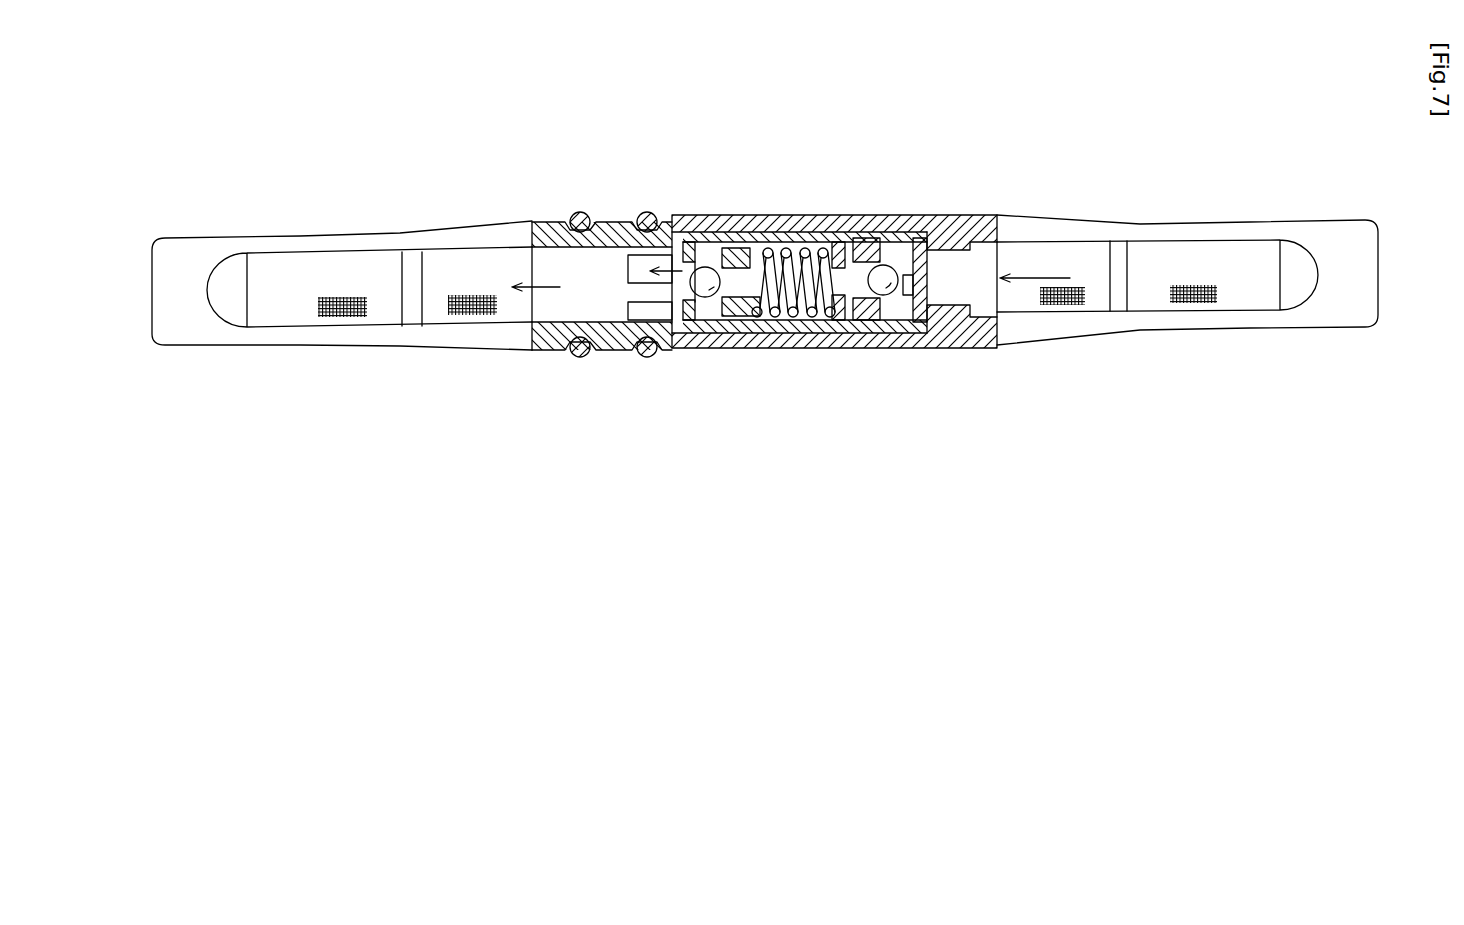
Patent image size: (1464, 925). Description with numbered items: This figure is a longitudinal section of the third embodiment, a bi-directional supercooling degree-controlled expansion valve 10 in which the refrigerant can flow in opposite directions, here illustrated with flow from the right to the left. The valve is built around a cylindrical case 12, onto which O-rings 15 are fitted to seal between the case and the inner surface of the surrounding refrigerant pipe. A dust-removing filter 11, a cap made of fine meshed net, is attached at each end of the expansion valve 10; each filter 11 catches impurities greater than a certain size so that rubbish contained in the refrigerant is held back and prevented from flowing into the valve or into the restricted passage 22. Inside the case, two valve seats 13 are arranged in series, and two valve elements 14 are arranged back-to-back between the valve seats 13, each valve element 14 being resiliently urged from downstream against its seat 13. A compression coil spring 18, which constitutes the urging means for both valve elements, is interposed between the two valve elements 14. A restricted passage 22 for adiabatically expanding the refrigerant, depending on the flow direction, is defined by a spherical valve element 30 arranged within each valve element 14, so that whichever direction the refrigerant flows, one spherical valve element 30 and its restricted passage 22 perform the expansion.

The expansion valve 10 is at (764, 263).
The dust-removing filter 11 is at (327, 318).
The cylindrical case 12 is at (613, 342).
The valve seat 13 is at (668, 233).
The valve element 14 is at (722, 340).
The O-ring 15 is at (648, 210).
The compression coil spring 18 is at (796, 312).
The restricted passage 22 is at (703, 300).
The spherical valve element 30 is at (707, 267).